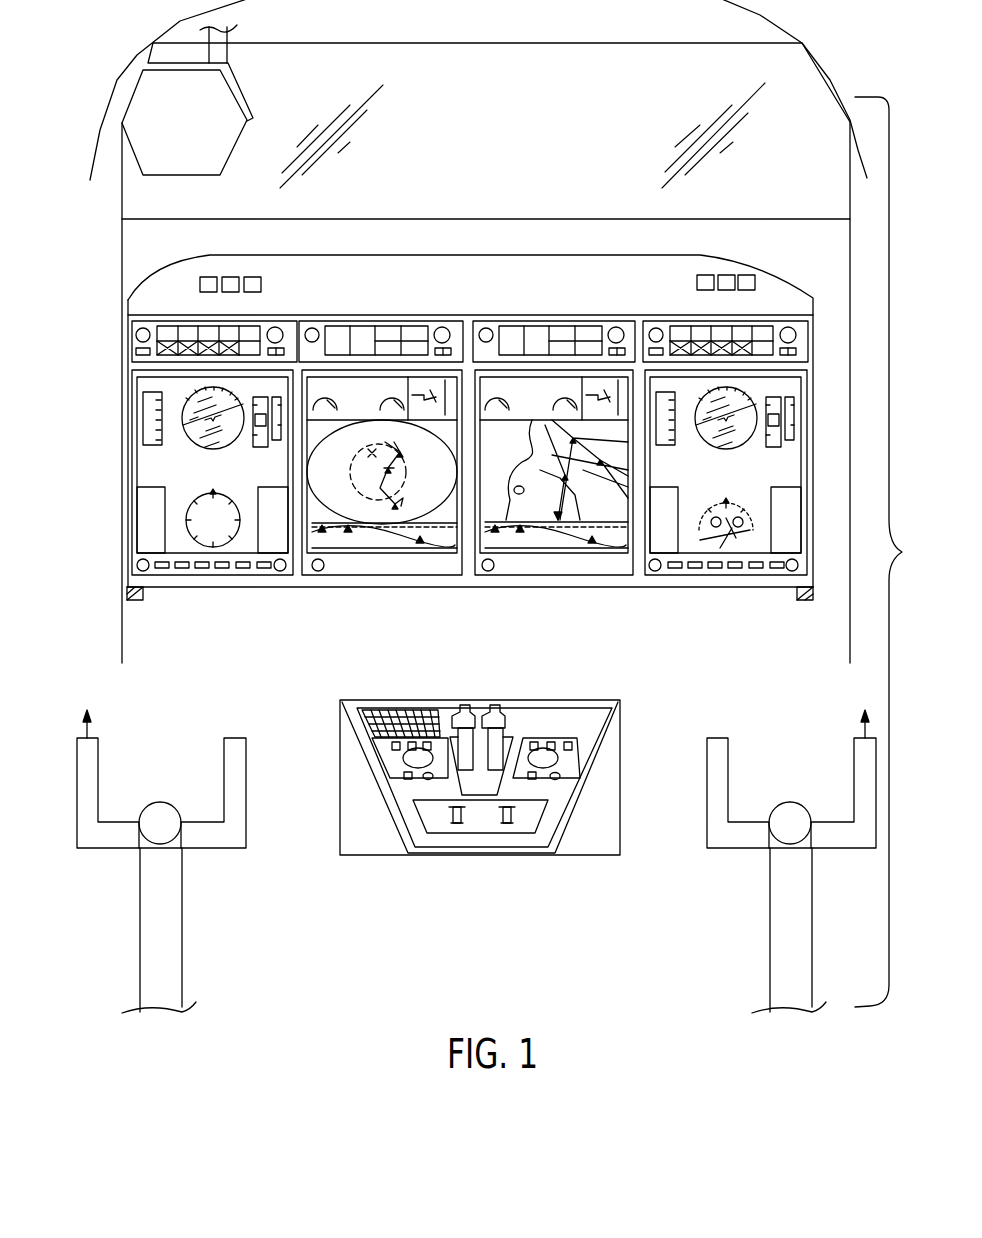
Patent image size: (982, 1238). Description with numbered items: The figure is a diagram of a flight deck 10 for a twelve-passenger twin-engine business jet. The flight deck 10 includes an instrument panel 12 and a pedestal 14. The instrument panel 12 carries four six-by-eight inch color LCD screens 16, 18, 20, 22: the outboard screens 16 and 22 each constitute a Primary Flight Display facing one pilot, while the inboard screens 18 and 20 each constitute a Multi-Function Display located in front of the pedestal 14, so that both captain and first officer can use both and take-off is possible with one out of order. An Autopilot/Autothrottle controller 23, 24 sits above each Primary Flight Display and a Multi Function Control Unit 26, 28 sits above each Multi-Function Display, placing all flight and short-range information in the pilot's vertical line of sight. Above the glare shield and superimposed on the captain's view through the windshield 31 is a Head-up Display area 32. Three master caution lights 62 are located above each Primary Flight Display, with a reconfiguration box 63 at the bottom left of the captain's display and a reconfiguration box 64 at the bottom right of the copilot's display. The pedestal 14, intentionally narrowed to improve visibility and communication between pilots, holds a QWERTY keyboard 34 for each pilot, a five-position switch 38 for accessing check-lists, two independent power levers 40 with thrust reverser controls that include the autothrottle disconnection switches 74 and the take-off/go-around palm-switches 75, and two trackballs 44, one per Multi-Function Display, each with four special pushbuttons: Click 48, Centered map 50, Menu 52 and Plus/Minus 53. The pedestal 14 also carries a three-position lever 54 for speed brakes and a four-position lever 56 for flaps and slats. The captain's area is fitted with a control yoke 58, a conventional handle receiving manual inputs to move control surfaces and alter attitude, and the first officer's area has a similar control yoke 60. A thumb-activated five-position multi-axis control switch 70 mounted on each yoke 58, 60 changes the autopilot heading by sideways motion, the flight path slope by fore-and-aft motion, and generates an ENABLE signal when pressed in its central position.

The flight deck 10 is at (480, 919).
The instrument panel 12 is at (815, 362).
The pedestal 14 is at (621, 765).
The color LCD screen 16 is at (215, 475).
The color LCD screen 18 is at (368, 523).
The color LCD screen 20 is at (563, 530).
The color LCD screen 22 is at (720, 490).
The Autopilot/Autothrottle controller 23 is at (165, 308).
The Autopilot/Autothrottle controller 24 is at (661, 308).
The Multi Function Control Unit 26 is at (357, 304).
The Multi Function Control Unit 28 is at (537, 304).
The windshield 31 is at (469, 119).
The Head-up Display area 32 is at (240, 80).
The QWERTY keyboard 34 is at (388, 730).
The five-position switch 38 is at (426, 780).
The power lever 40 is at (457, 718).
The trackball 44 is at (398, 769).
The Click pushbutton 48 is at (537, 740).
The Centered map pushbutton 50 is at (553, 740).
The Menu pushbutton 52 is at (570, 740).
The Plus/Minus pushbutton 53 is at (408, 779).
The speed brake lever 54 is at (453, 826).
The flaps/slats lever 56 is at (508, 820).
The control yoke 58 is at (117, 868).
The control yoke 60 is at (791, 875).
The master caution light 62 is at (218, 275).
The reconfiguration box 63 is at (120, 597).
The reconfiguration box 64 is at (818, 597).
The five-position multi-axis control switch 70 is at (90, 716).
The AT disconnection switch 74 is at (463, 703).
The Take off/Go around palm-switch 75 is at (493, 703).